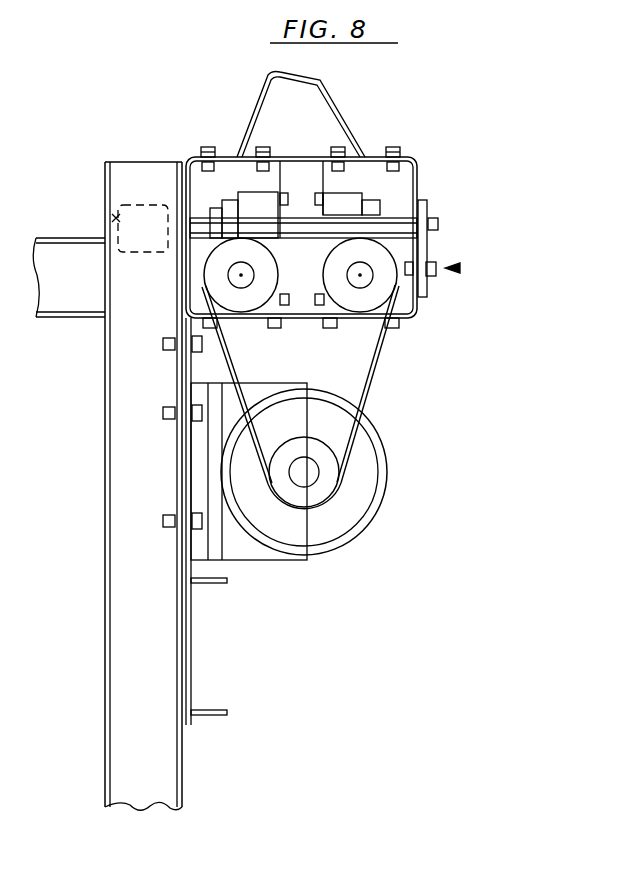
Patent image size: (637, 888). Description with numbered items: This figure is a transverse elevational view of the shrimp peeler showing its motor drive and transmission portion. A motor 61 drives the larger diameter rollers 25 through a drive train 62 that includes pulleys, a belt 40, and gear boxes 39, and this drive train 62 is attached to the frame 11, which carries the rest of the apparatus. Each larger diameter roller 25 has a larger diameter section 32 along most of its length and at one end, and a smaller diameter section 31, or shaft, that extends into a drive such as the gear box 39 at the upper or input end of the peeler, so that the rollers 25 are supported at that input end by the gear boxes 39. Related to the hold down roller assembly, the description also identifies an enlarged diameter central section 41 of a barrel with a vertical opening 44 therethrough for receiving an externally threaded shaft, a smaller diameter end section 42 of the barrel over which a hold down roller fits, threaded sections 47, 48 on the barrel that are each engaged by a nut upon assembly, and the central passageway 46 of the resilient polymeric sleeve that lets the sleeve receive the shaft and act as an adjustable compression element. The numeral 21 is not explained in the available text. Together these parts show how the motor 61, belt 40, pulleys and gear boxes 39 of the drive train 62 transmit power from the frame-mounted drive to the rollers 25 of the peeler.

The frame 11 is at (123, 668).
The arm 21 is at (64, 300).
The larger diameter roller 25 is at (118, 218).
The smaller diameter section 31 is at (197, 222).
The larger diameter section 32 is at (160, 203).
The gear box 39 is at (357, 200).
The belt 40 is at (372, 370).
The enlarged diameter central section 41 is at (360, 283).
The smaller diameter end section 42 is at (243, 283).
The vertical opening 44 is at (297, 493).
The central passageway 46 is at (408, 255).
The threaded section 47 is at (205, 265).
The threaded section 48 is at (306, 470).
The motor 61 is at (392, 460).
The drive train 62 is at (460, 268).